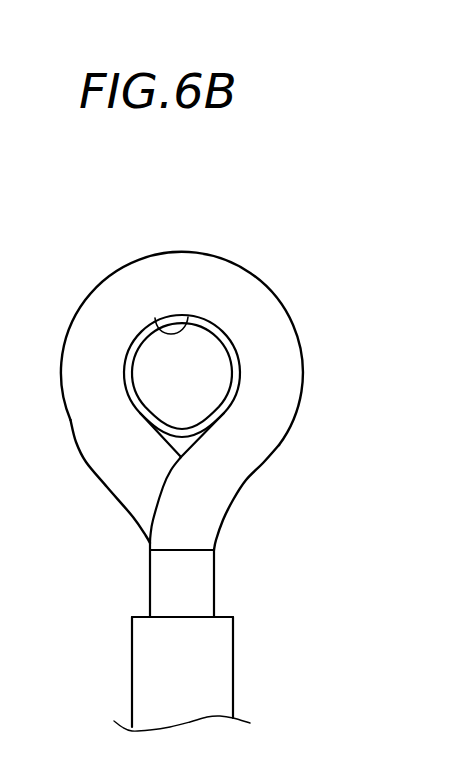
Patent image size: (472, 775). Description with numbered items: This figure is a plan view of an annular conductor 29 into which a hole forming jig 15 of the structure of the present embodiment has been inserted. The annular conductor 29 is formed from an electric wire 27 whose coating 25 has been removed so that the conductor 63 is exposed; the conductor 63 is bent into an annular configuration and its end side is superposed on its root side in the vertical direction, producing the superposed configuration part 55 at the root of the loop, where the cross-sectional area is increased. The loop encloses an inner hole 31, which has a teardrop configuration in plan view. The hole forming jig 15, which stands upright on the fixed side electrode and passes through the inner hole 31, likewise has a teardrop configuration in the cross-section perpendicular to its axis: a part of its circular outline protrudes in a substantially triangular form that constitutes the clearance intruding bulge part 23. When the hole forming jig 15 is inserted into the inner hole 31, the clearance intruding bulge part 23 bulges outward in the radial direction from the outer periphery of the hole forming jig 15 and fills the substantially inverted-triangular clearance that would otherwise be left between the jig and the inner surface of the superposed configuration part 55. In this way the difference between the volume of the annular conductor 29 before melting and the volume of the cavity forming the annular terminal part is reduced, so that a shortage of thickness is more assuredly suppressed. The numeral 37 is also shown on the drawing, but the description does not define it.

The annular conductor 29 is at (264, 272).
The hole forming jig 15 is at (224, 329).
The inner hole 31 is at (157, 318).
The clearance intruding bulge part 23 is at (183, 413).
The conductor 63 is at (287, 373).
The superposed configuration part 55 is at (187, 518).
The coating 25 is at (177, 616).
The electric wire 27 is at (129, 664).
The barrel portion 37 is at (235, 667).